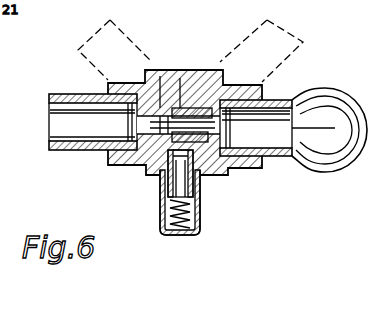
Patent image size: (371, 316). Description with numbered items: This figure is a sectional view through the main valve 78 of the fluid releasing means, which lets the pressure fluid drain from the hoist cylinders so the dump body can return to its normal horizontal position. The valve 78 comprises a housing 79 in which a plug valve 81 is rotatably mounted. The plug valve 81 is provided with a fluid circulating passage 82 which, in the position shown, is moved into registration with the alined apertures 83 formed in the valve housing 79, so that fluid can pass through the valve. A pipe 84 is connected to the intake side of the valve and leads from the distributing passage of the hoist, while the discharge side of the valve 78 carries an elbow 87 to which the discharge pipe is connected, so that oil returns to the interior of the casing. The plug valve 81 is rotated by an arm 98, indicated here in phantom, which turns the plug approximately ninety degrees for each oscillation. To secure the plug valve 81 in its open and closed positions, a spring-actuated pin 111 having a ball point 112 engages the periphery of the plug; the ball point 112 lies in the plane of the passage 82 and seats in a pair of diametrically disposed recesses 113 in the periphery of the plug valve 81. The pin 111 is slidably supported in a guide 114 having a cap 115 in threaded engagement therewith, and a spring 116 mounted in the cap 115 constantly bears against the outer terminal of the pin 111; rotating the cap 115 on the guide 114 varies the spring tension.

The main valve 78 is at (98, 165).
The housing 79 is at (262, 165).
The plug valve 81 is at (202, 84).
The fluid circulating passage 82 is at (167, 76).
The alined apertures 83 is at (150, 118).
The pipe 84 is at (60, 95).
The elbow 87 is at (340, 104).
The arm 98 is at (100, 38).
The spring-actuated pin 111 is at (176, 192).
The ball point 112 is at (126, 167).
The recesses 113 is at (184, 78).
The guide 114 is at (166, 188).
The cap 115 is at (200, 231).
The spring 116 is at (178, 218).